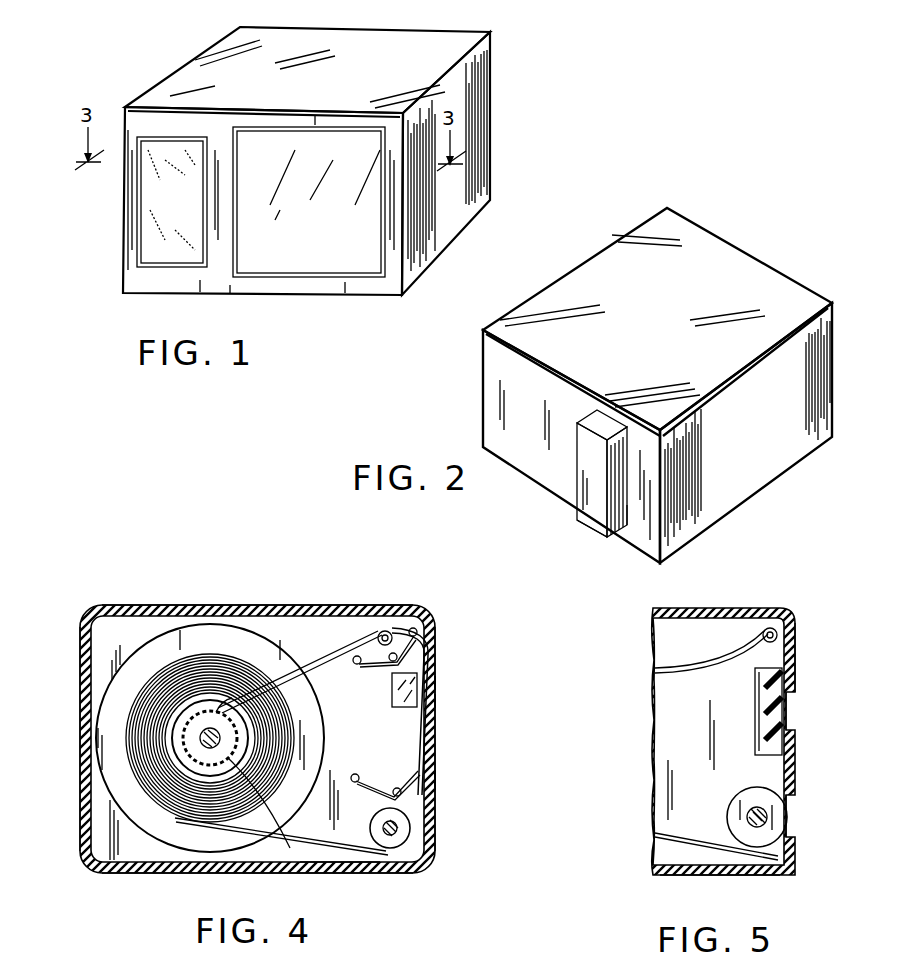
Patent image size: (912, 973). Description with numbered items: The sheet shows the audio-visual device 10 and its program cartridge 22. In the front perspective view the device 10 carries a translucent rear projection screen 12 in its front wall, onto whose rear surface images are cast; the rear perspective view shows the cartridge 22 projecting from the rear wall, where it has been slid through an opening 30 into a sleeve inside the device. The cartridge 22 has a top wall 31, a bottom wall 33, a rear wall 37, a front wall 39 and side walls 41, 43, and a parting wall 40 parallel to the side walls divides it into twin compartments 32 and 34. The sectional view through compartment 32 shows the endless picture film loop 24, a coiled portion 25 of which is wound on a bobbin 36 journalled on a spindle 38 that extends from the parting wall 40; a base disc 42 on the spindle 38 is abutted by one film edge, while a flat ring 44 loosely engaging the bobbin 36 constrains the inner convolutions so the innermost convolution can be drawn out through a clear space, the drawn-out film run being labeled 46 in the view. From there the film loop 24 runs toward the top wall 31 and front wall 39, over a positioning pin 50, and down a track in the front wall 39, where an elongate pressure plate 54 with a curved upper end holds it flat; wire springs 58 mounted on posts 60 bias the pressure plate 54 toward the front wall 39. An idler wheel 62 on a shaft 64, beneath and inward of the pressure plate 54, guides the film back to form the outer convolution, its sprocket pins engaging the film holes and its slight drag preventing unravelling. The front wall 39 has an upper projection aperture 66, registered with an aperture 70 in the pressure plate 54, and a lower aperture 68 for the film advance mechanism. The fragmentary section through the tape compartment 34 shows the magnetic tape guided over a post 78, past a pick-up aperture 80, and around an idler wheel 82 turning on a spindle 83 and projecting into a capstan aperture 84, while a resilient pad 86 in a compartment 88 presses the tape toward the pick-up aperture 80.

In FIG. 1, the audio-visual device 10 is at (196, 52).
In FIG. 2, the audio-visual device 10 is at (621, 226).
In FIG. 1, the translucent rear projection screen 12 is at (304, 270).
In FIG. 2, the cartridge 22 is at (590, 526).
In FIG. 4, the cartridge 22 is at (172, 596).
In FIG. 4, the endless picture film loop 24 is at (340, 648).
In FIG. 4, the coiled portion 25 is at (140, 770).
In FIG. 2, the opening 30 is at (635, 512).
In FIG. 2, the top wall 31 is at (595, 427).
In FIG. 4, the top wall 31 is at (238, 603).
In FIG. 5, the top wall 31 is at (737, 608).
In FIG. 4, the compartment 32 is at (328, 859).
In FIG. 4, the bottom wall 33 is at (312, 872).
In FIG. 5, the bottom wall 33 is at (685, 875).
In FIG. 5, the tape compartment 34 is at (741, 861).
In FIG. 4, the bobbin 36 is at (278, 833).
In FIG. 2, the rear wall 37 is at (587, 483).
In FIG. 4, the rear wall 37 is at (80, 728).
In FIG. 4, the spindle 38 is at (200, 736).
In FIG. 4, the front wall 39 is at (430, 648).
In FIG. 5, the front wall 39 is at (788, 652).
In FIG. 4, the parting wall 40 is at (265, 850).
In FIG. 2, the side wall 41 is at (616, 470).
In FIG. 4, the base disc 42 is at (173, 833).
In FIG. 5, the side wall 43 is at (686, 632).
In FIG. 4, the flat ring 44 is at (243, 747).
In FIG. 4, the tape leader 46 is at (217, 707).
In FIG. 4, the positioning pin 50 is at (385, 630).
In FIG. 4, the pressure plate 54 is at (421, 735).
In FIG. 4, the wire springs 58 is at (380, 667).
In FIG. 4, the posts 60 is at (416, 629).
In FIG. 4, the idler wheel 62 is at (403, 849).
In FIG. 4, the shaft 64 is at (400, 832).
In FIG. 4, the projection aperture 66 is at (430, 698).
In FIG. 4, the lower aperture 68 is at (430, 780).
In FIG. 4, the aperture 70 is at (430, 682).
In FIG. 5, the post 78 is at (764, 641).
In FIG. 5, the pick-up aperture 80 is at (790, 698).
In FIG. 5, the idler wheel 82 is at (788, 862).
In FIG. 5, the spindle 83 is at (767, 823).
In FIG. 5, the capstan aperture 84 is at (791, 805).
In FIG. 5, the resilient pad 86 is at (776, 716).
In FIG. 5, the compartment 88 is at (756, 753).